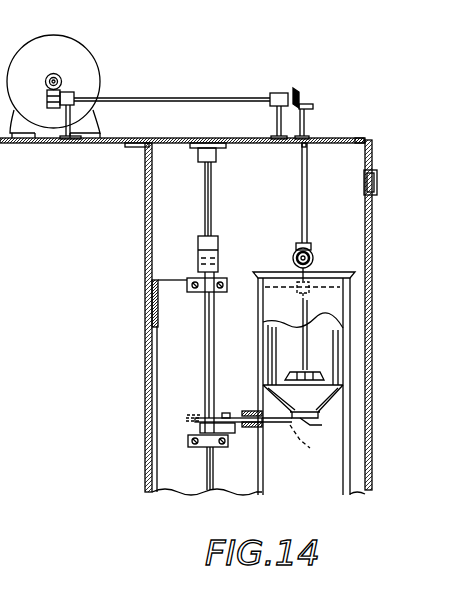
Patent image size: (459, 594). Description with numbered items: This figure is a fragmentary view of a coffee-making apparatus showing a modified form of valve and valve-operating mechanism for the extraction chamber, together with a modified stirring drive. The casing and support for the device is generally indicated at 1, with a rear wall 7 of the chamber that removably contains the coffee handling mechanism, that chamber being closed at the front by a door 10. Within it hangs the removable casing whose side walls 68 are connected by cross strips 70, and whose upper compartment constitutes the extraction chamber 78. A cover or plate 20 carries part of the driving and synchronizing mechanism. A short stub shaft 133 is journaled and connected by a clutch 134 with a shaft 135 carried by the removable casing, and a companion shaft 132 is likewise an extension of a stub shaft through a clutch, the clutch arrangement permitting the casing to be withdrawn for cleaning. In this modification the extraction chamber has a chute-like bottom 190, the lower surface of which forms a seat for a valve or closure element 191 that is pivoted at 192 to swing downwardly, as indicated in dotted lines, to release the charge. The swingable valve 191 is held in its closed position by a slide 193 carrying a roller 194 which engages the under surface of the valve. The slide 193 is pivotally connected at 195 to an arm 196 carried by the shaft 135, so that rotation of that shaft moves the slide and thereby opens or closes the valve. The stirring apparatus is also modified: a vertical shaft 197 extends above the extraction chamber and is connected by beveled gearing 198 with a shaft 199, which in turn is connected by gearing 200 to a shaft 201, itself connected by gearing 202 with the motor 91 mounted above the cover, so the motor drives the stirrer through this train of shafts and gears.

The casing and support 1 is at (373, 162).
The rear wall 7 is at (147, 363).
The door 10 is at (373, 238).
The cover 20 is at (178, 120).
The side walls 68 is at (157, 426).
The cross strips 70 is at (150, 305).
The extraction chamber 78 is at (0, 258).
The motor 91 is at (63, 45).
The shaft 132 is at (210, 482).
The shaft 133 is at (212, 198).
The clutch 134 is at (219, 248).
The shaft 135 is at (214, 347).
The chute-like bottom 190 is at (345, 400).
The valve or closure element 191 is at (305, 450).
The pivot 192 is at (262, 412).
The slide 193 is at (290, 420).
The roller 194 is at (302, 428).
The pivotal connection 195 is at (230, 417).
The arm 196 is at (218, 425).
The vertical shaft 197 is at (307, 336).
The beveled gearing 198 is at (312, 250).
The shaft 199 is at (307, 170).
The gearing 200 is at (300, 93).
The shaft 201 is at (143, 97).
The gearing 202 is at (60, 76).